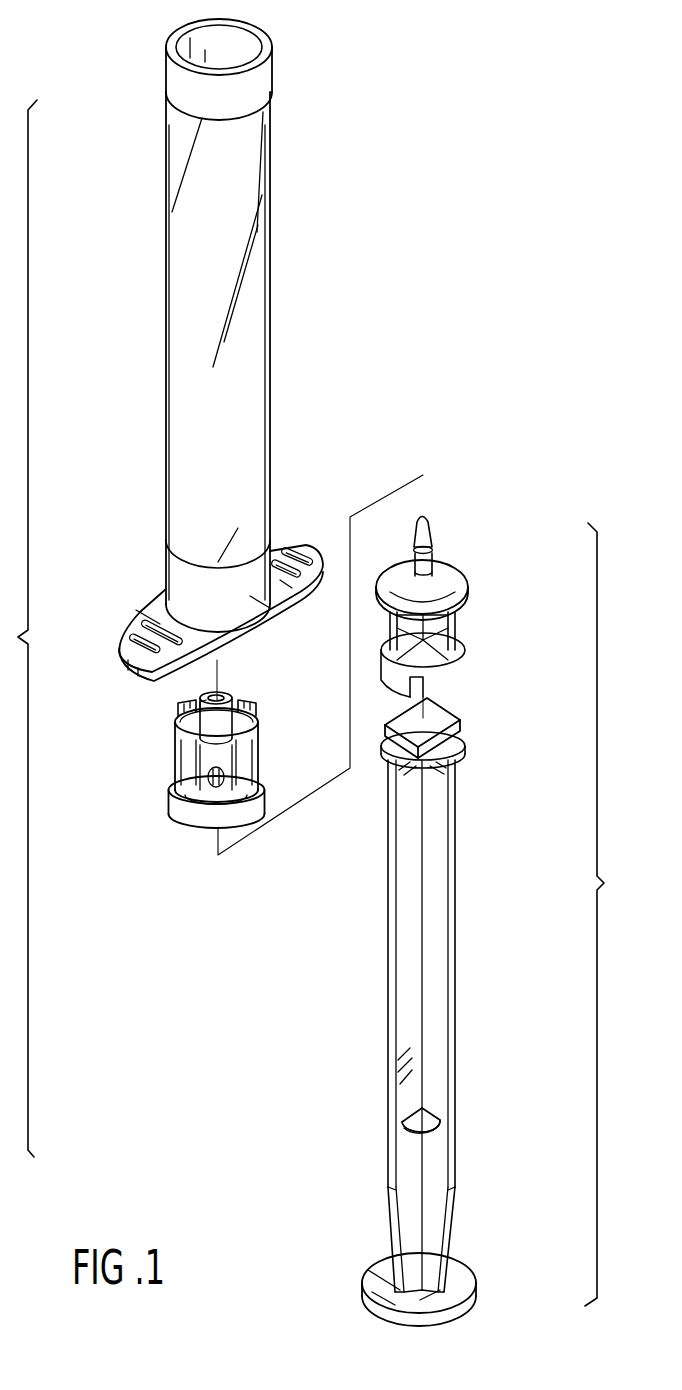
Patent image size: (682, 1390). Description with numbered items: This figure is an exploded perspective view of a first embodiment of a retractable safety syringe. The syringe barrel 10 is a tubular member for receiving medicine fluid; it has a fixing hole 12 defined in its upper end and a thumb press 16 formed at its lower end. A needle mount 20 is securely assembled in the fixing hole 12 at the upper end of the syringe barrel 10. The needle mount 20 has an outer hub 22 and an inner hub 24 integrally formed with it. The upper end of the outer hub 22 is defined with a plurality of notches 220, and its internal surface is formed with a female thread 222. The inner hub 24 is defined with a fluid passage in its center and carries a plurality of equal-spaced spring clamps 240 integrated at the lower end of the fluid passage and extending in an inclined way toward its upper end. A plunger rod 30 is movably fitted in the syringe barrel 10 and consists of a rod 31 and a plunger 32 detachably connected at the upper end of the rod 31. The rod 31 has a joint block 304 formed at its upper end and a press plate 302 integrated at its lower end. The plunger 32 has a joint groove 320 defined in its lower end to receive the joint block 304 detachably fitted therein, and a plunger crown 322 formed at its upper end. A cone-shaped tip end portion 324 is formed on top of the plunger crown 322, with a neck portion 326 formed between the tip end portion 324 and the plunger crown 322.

The syringe barrel 10 is at (268, 212).
The fixing hole 12 is at (255, 41).
The thumb press 16 is at (134, 644).
The needle mount 20 is at (156, 785).
The outer hub 22 is at (258, 770).
The notches 220 is at (244, 712).
The female thread 222 is at (181, 710).
The inner hub 24 is at (230, 695).
The spring clamps 240 is at (222, 783).
The plunger rod 30 is at (502, 899).
The rod 31 is at (453, 952).
The plunger 32 is at (457, 633).
The joint groove 320 is at (424, 680).
The plunger crown 322 is at (468, 589).
The tip end portion 324 is at (432, 524).
The neck portion 326 is at (434, 560).
The press plate 302 is at (478, 1280).
The joint block 304 is at (452, 718).